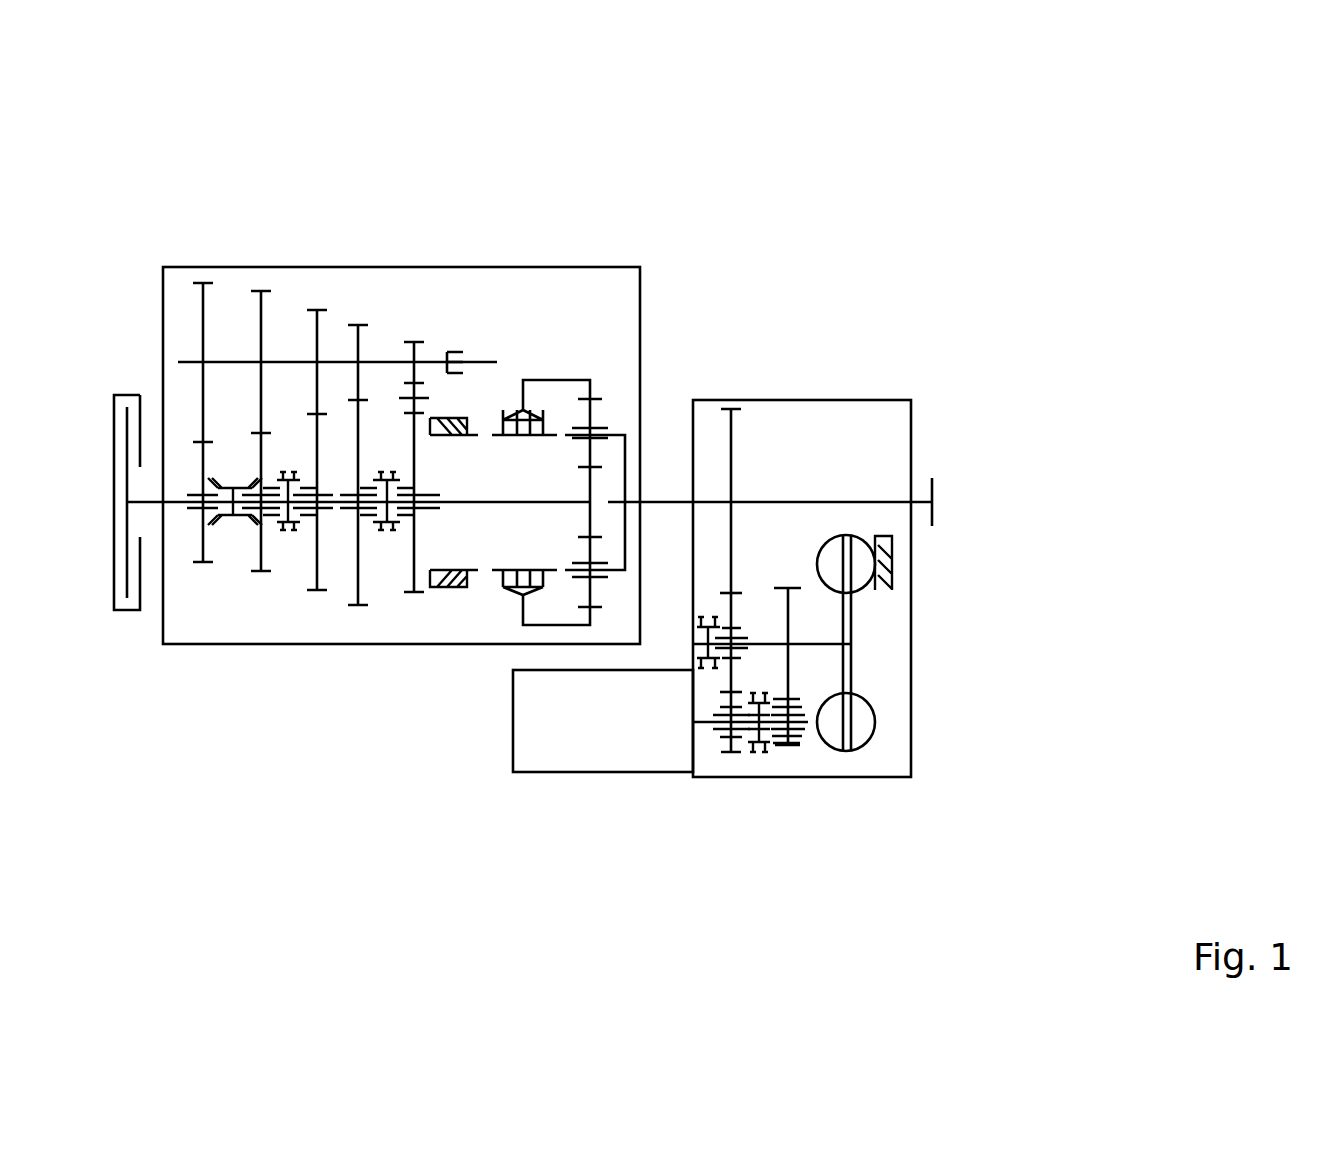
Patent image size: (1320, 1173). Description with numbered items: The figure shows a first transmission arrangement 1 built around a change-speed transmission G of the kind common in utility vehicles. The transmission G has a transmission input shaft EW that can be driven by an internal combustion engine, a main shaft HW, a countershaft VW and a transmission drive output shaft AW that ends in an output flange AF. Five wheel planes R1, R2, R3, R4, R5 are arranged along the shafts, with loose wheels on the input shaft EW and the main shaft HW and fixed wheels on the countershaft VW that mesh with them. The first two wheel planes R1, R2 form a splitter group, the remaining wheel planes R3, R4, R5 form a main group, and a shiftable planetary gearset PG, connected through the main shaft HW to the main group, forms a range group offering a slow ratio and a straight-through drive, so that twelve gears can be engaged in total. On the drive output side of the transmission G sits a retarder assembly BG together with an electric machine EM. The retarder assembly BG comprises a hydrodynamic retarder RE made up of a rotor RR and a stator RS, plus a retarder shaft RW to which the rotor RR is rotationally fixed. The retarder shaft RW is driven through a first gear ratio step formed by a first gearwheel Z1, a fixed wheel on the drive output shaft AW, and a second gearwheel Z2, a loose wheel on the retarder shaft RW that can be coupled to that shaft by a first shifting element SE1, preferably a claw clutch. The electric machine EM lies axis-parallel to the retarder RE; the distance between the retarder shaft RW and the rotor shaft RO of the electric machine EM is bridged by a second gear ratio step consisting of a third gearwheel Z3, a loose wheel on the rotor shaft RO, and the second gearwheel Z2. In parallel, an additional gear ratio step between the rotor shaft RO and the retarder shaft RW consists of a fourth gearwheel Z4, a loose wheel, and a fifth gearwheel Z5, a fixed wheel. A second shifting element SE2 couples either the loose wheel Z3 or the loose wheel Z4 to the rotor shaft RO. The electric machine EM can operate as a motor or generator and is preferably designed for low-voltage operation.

The transmission input shaft EW is at (150, 502).
The change-speed transmission G is at (328, 258).
The countershaft VW is at (388, 362).
The main shaft HW is at (480, 502).
The planetary gearset PG is at (560, 372).
The transmission drive output shaft AW is at (665, 502).
The transmission arrangement 1 is at (722, 200).
The first gearwheel Z1 is at (731, 457).
The retarder assembly BG is at (817, 392).
The second gearwheel Z2 is at (728, 618).
The output flange AF is at (932, 516).
The retarder shaft RW is at (805, 642).
The hydrodynamic retarder RE is at (864, 639).
The fifth gearwheel Z5 is at (788, 663).
The stator RS is at (858, 722).
The first wheel plane R1 is at (203, 657).
The second wheel plane R2 is at (260, 657).
The third wheel plane R3 is at (317, 657).
The fourth wheel plane R4 is at (358, 657).
The fifth wheel plane R5 is at (414, 657).
The first shifting element SE1 is at (693, 684).
The electric machine EM is at (574, 780).
The rotor shaft RO is at (700, 723).
The third gearwheel Z3 is at (728, 752).
The second shifting element SE2 is at (762, 758).
The fourth gearwheel Z4 is at (790, 742).
The rotor RR is at (830, 722).